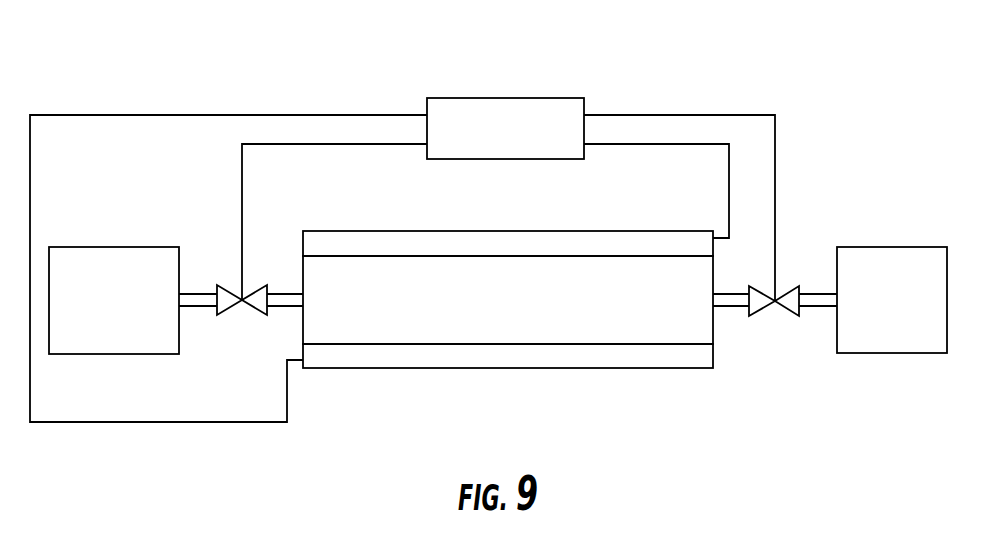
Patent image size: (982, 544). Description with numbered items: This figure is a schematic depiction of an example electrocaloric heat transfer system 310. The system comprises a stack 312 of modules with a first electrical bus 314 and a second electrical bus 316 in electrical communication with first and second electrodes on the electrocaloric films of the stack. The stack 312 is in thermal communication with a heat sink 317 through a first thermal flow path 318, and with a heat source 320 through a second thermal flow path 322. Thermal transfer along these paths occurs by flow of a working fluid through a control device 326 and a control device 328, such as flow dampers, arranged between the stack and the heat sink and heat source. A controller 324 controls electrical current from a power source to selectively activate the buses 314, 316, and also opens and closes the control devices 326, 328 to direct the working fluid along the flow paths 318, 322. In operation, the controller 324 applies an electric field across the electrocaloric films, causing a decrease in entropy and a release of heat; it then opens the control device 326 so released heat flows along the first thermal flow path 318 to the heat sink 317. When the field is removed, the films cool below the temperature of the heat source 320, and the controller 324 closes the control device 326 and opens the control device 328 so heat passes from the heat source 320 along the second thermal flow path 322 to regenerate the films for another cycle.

The heat transfer system 310 is at (786, 68).
The stack 312 is at (529, 332).
The first electrical bus 314 is at (408, 242).
The second electrical bus 316 is at (648, 360).
The heat sink 317 is at (908, 313).
The first thermal flow path 318 is at (825, 293).
The heat source 320 is at (131, 313).
The second thermal flow path 322 is at (213, 292).
The controller 324 is at (521, 141).
The control device 326 is at (758, 307).
The control device 328 is at (252, 301).